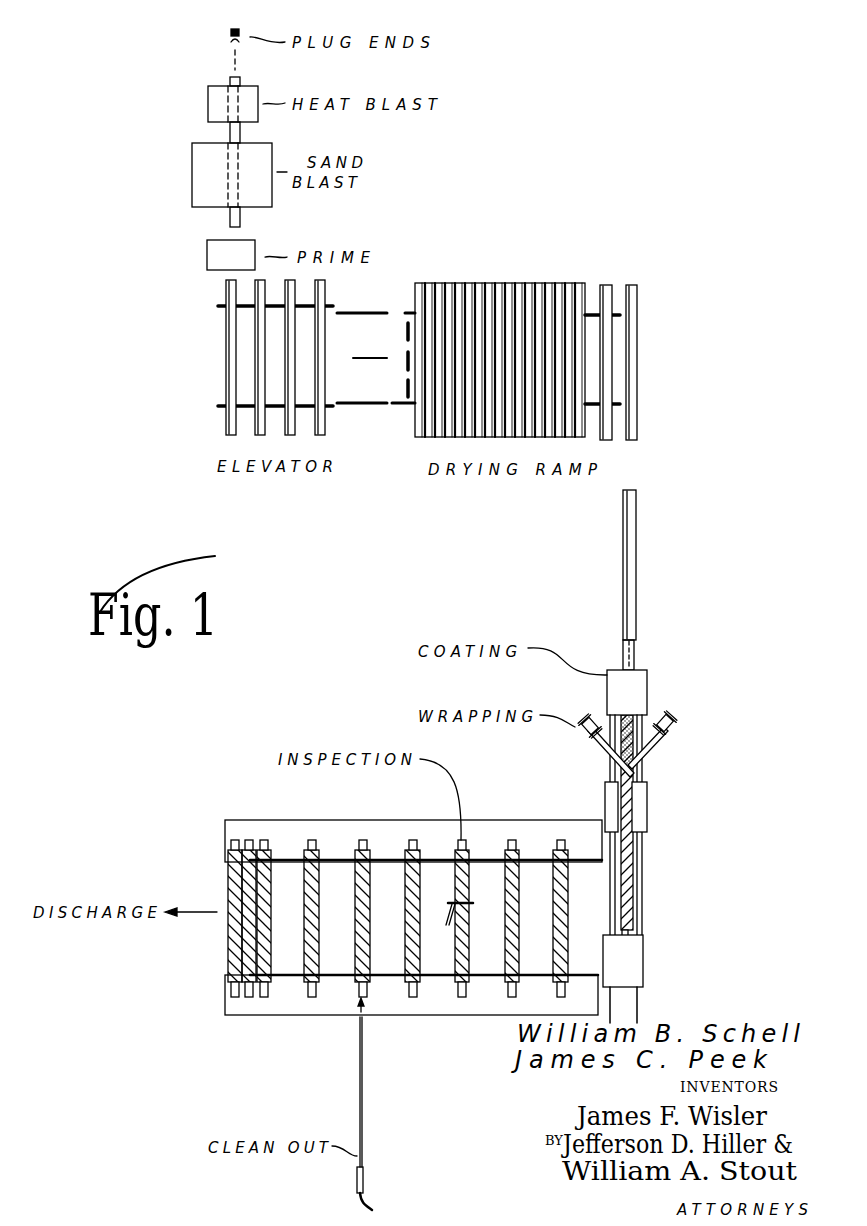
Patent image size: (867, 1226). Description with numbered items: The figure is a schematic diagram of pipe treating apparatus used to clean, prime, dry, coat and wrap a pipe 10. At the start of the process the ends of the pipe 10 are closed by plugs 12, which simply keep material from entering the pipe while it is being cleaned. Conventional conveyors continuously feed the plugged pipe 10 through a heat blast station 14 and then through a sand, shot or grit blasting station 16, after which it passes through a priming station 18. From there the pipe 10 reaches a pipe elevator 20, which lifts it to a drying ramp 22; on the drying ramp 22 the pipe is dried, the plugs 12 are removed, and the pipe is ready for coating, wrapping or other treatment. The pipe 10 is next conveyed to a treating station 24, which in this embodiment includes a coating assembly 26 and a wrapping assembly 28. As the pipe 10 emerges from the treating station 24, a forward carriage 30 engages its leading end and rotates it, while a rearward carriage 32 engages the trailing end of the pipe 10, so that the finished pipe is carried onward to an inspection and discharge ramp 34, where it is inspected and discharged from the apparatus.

The pipe 10 is at (228, 135).
The plugs 12 is at (229, 32).
The heat blast station 14 is at (208, 100).
The sand, shot or grit blasting station 16 is at (192, 168).
The priming station 18 is at (207, 253).
The pipe elevator 20 is at (218, 305).
The drying ramp 22 is at (598, 303).
The treating station 24 is at (667, 793).
The coating assembly 26 is at (647, 673).
The wrapping assembly 28 is at (652, 748).
The forward carriage 30 is at (645, 962).
The rearward carriage 32 is at (648, 810).
The inspection and discharge ramp 34 is at (540, 823).